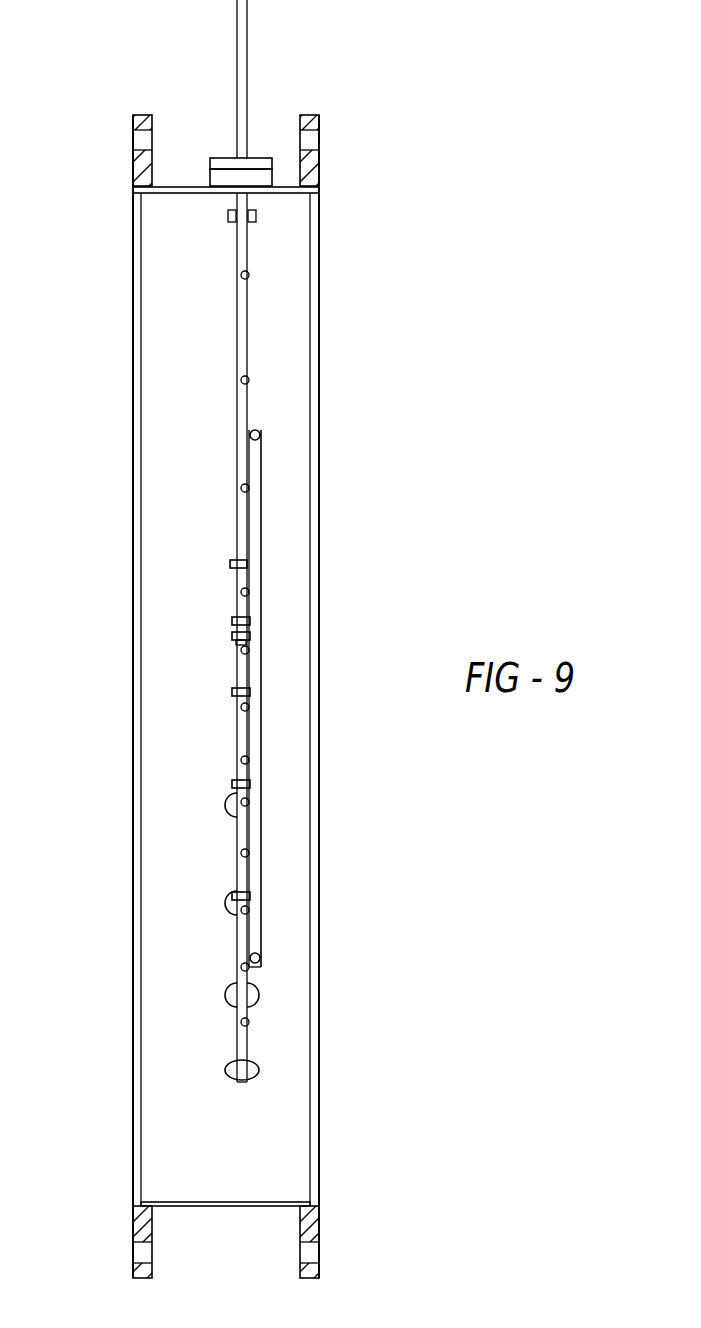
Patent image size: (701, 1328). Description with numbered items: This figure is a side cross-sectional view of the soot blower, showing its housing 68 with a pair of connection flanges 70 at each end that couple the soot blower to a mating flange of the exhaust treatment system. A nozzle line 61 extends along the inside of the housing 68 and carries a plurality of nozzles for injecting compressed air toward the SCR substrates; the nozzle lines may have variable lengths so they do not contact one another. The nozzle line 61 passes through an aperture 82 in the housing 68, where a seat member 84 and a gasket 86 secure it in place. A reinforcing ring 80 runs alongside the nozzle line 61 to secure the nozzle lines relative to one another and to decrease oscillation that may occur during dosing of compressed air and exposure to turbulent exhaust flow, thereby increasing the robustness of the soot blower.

The nozzle line 61 is at (240, 315).
The housing 68 is at (190, 187).
The connection flange 70 is at (319, 163).
The reinforcing ring 80 is at (261, 735).
The aperture 82 is at (253, 194).
The seat member 84 is at (225, 176).
The gasket 86 is at (262, 158).